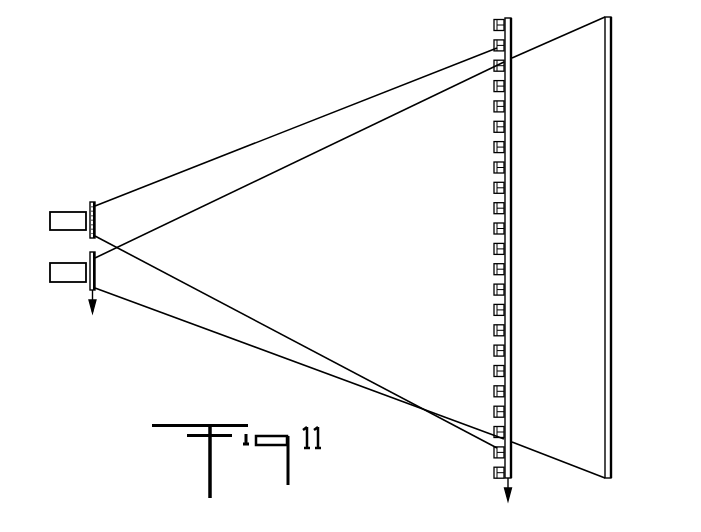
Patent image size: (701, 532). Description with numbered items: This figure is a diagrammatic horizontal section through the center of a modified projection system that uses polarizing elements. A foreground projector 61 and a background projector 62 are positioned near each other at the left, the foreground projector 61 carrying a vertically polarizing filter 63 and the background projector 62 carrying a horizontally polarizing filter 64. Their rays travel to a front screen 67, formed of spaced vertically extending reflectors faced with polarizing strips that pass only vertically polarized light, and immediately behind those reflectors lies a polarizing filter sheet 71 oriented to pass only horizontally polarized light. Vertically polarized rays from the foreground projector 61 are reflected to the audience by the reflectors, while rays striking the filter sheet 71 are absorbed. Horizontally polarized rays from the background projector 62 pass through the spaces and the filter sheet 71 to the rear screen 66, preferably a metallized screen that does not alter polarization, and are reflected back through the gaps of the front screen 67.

The foreground projector 61 is at (53, 214).
The background projector 62 is at (52, 273).
The vertically polarizing filter 63 is at (90, 207).
The horizontally polarizing filter 64 is at (92, 288).
The rear screen 66 is at (610, 183).
The front screen 67 is at (511, 198).
The polarizing filter sheet 71 is at (509, 147).